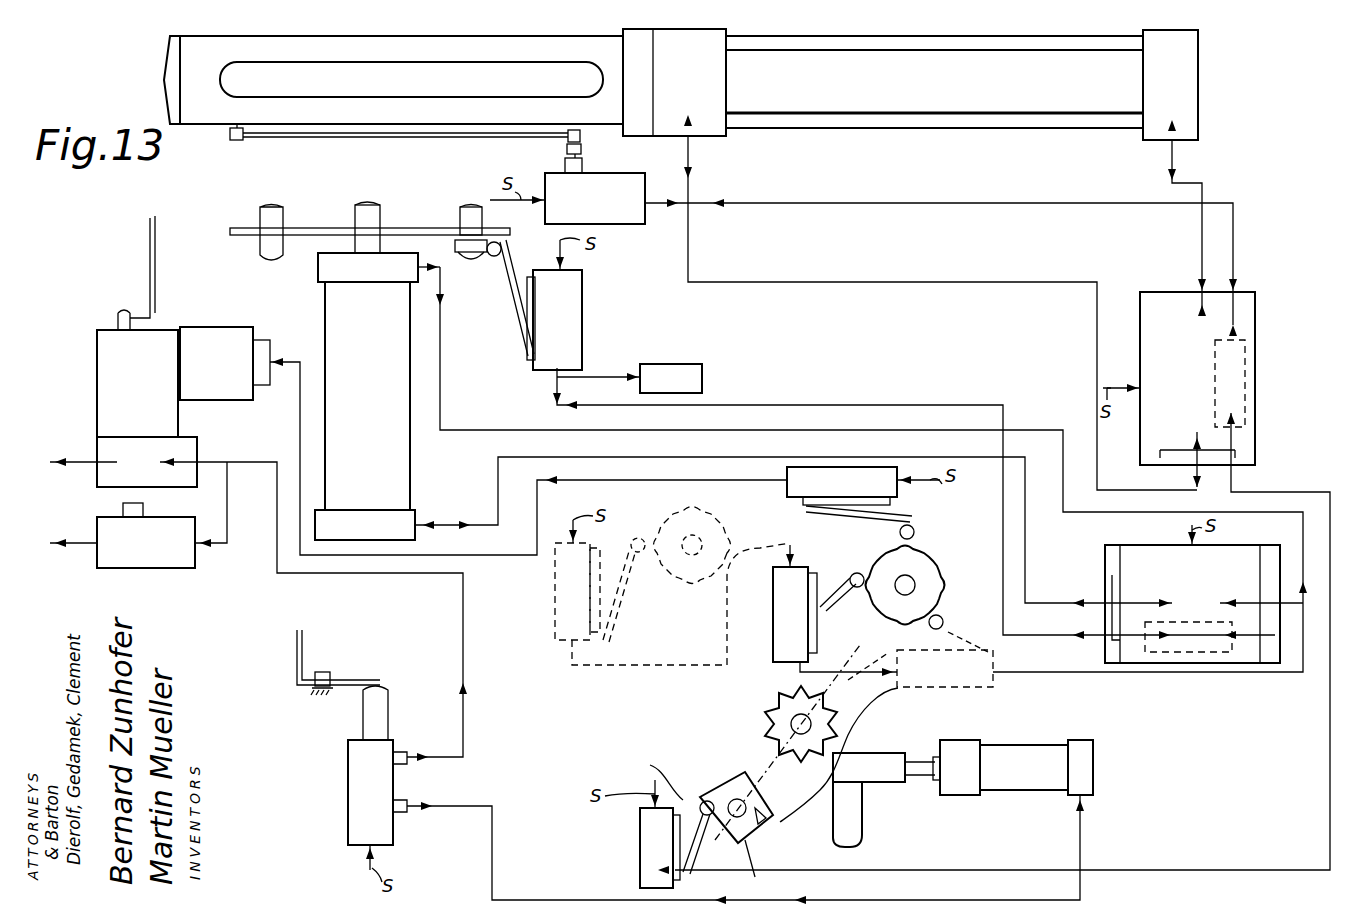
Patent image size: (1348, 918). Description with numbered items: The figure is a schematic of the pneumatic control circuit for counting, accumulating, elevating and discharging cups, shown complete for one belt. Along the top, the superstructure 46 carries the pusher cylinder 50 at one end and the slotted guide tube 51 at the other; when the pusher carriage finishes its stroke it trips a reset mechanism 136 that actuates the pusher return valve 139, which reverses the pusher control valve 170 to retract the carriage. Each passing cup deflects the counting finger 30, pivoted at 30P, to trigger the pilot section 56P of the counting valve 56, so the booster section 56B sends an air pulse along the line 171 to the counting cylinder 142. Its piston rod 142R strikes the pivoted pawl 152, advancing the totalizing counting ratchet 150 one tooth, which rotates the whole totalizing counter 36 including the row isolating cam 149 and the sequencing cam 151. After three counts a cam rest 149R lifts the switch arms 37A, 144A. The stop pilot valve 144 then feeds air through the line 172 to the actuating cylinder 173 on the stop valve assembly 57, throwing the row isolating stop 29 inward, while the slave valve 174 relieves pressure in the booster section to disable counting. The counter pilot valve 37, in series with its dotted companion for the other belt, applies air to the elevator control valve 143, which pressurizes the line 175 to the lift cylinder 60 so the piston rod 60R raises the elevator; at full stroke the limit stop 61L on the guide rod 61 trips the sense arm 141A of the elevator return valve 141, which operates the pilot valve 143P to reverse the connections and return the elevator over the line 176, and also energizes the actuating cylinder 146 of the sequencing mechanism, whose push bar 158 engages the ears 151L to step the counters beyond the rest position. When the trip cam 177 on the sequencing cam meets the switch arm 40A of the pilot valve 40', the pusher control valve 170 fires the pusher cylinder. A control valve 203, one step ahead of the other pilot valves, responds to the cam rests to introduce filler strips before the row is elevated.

The slotted guide tube 51 is at (410, 38).
The pusher cylinder 50 is at (962, 85).
The superstructure 46 is at (768, 128).
The reset mechanism 136 is at (344, 139).
The pusher return valve 139 is at (861, 225).
The guide rod 61 is at (258, 213).
The piston rod 60R is at (400, 186).
The limit stop 61L is at (458, 262).
The sense arm 141A is at (528, 318).
The elevator return valve 141 is at (557, 305).
The actuating cylinder 146 is at (629, 378).
The row isolating stop 29 is at (150, 266).
The stop valve assembly 57 is at (147, 408).
The actuating cylinder 173 is at (225, 363).
The line 172 is at (300, 432).
The lift cylinder 60 is at (377, 396).
The slave valve 174 is at (146, 535).
The line 176 is at (440, 412).
The line 175 is at (498, 492).
The stop pilot valve 144 is at (863, 486).
The switch arm 144A is at (892, 521).
The row isolating cam 149 is at (920, 572).
The cam rest 149R is at (918, 546).
The pusher control valve 170 is at (1002, 581).
The elevator control valve 143 is at (1192, 594).
The pilot valve 143P is at (1192, 658).
The counter pilot valve 37 is at (773, 651).
The switch arm 37A is at (828, 597).
The control valve 203 is at (920, 659).
The pilot section 30P is at (322, 672).
The counting finger 30 is at (352, 680).
The pilot section 56P is at (363, 723).
The counting valve 56 is at (348, 799).
The booster section 56B is at (407, 778).
The totalizing counting ratchet 150 is at (768, 700).
The lugs or ears 151L is at (747, 774).
The sequencing cam 151 is at (735, 790).
The switch arm 40A is at (643, 771).
The pilot valve 40' is at (633, 834).
The push bar 158 is at (792, 825).
The trip cam 177 is at (777, 858).
The totalizing counter 36 is at (903, 693).
The piston rod 142R is at (929, 760).
The counting cylinder 142 is at (1016, 767).
The pivoted pawl 152 is at (860, 795).
The line 171 is at (492, 885).